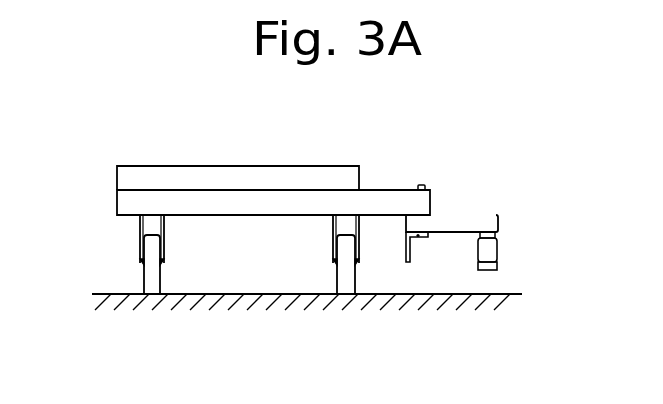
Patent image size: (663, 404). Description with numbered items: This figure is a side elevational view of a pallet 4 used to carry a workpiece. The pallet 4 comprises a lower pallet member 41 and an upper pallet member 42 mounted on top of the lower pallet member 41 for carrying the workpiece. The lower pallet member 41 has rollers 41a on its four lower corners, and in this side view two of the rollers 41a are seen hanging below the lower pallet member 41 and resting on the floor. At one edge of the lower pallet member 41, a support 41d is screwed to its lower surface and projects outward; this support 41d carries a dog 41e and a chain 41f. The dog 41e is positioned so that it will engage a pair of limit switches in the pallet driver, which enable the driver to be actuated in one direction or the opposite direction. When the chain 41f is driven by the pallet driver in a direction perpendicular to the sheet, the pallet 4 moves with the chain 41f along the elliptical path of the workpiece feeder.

The pallet 4 is at (307, 248).
The lower pallet member 41 is at (381, 192).
The upper pallet member 42 is at (230, 174).
The rollers 41a is at (151, 290).
The support 41d is at (472, 215).
The dog 41e is at (406, 262).
The chain 41f is at (496, 247).